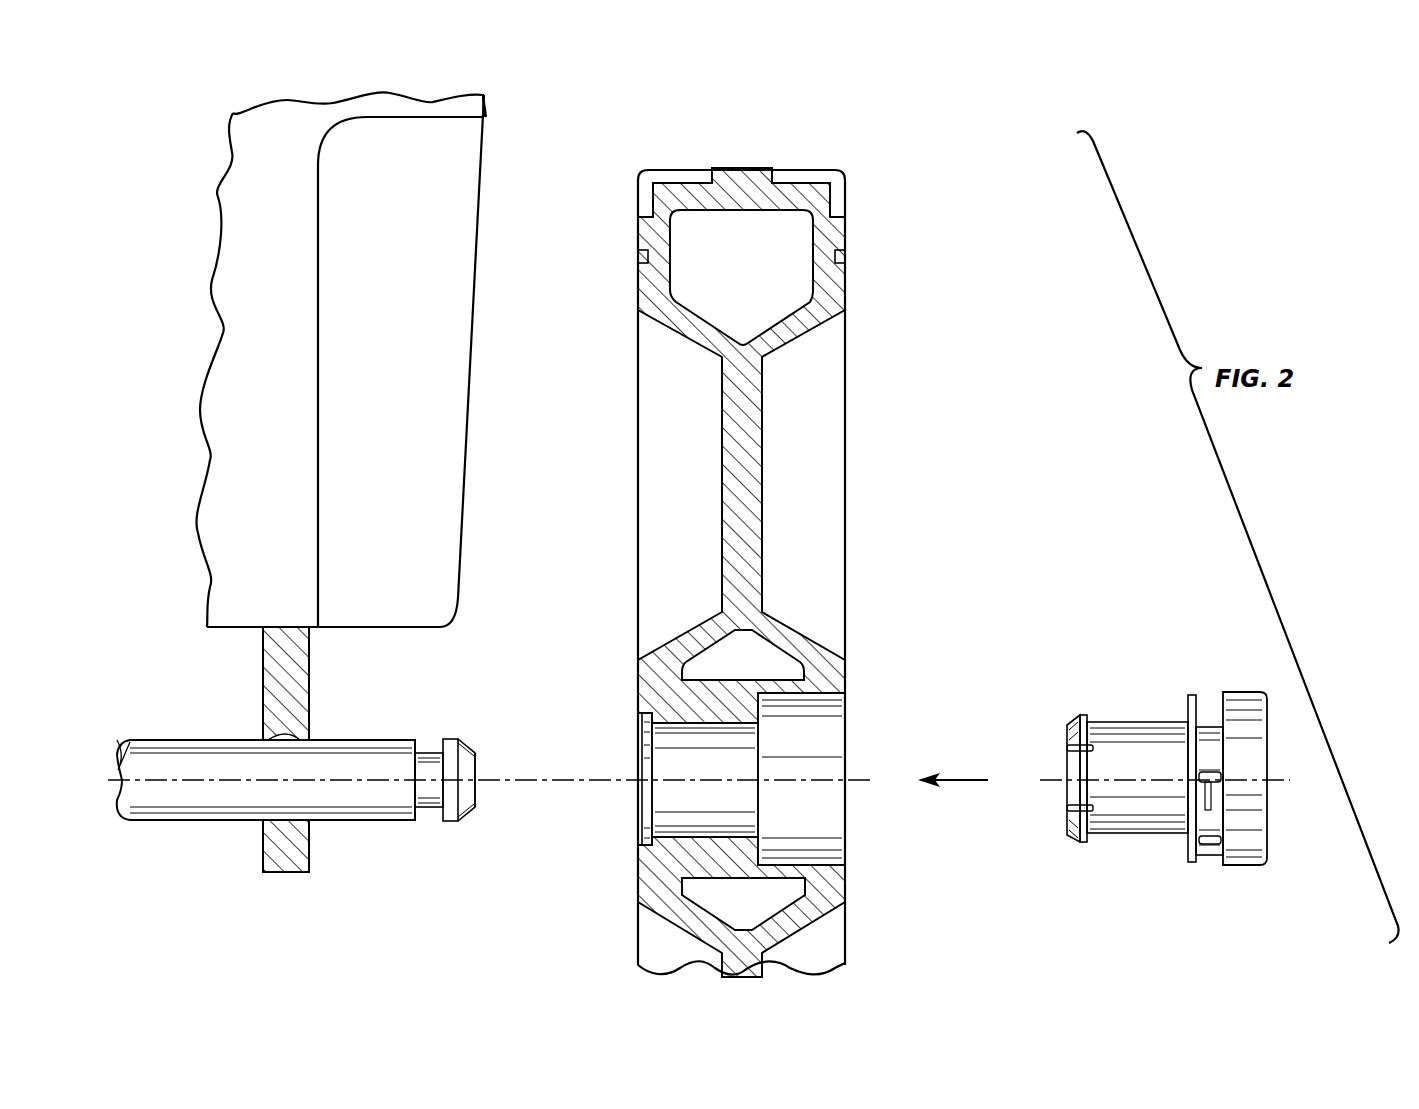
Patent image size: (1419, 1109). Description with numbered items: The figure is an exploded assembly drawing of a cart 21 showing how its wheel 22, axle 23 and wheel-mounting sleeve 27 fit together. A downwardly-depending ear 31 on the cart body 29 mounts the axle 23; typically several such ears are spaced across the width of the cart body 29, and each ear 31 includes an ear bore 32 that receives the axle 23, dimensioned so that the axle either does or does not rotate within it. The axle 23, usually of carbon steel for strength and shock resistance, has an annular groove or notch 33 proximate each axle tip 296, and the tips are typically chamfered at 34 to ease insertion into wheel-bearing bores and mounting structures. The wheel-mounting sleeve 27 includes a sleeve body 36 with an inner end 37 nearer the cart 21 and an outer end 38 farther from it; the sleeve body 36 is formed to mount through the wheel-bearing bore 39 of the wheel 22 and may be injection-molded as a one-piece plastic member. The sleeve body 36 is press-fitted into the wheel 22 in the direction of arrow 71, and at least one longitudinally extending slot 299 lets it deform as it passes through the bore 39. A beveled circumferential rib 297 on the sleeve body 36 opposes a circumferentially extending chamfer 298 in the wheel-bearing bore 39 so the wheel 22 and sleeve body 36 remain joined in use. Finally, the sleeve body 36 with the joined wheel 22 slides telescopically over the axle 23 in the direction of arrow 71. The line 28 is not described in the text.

The cart 21 is at (208, 205).
The wheel 22 is at (845, 280).
The axle 23 is at (220, 805).
The wheel-mounting sleeve 27 is at (1150, 672).
The wing edge line 28 is at (318, 362).
The cart body 29 is at (488, 100).
The ear 31 is at (290, 872).
The ear bore 32 is at (265, 738).
The annular groove or notch 33 is at (423, 806).
The chamfer 34 is at (470, 752).
The sleeve body 36 is at (1140, 830).
The inner end 37 is at (1067, 770).
The outer end 38 is at (1258, 740).
The wheel-bearing bore 39 is at (822, 720).
The arrow 71 is at (969, 782).
The axle tip 296 is at (480, 792).
The beveled circumferential rib 297 is at (1078, 716).
The chamfer 298 is at (642, 822).
The slot 299 is at (1068, 746).